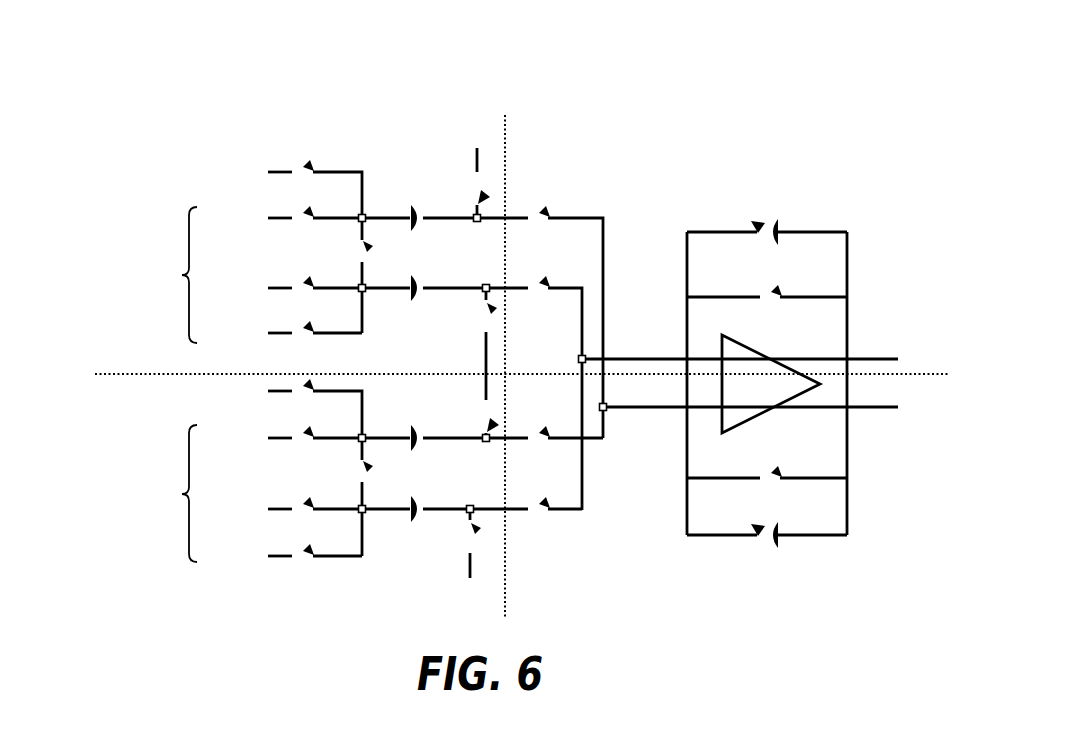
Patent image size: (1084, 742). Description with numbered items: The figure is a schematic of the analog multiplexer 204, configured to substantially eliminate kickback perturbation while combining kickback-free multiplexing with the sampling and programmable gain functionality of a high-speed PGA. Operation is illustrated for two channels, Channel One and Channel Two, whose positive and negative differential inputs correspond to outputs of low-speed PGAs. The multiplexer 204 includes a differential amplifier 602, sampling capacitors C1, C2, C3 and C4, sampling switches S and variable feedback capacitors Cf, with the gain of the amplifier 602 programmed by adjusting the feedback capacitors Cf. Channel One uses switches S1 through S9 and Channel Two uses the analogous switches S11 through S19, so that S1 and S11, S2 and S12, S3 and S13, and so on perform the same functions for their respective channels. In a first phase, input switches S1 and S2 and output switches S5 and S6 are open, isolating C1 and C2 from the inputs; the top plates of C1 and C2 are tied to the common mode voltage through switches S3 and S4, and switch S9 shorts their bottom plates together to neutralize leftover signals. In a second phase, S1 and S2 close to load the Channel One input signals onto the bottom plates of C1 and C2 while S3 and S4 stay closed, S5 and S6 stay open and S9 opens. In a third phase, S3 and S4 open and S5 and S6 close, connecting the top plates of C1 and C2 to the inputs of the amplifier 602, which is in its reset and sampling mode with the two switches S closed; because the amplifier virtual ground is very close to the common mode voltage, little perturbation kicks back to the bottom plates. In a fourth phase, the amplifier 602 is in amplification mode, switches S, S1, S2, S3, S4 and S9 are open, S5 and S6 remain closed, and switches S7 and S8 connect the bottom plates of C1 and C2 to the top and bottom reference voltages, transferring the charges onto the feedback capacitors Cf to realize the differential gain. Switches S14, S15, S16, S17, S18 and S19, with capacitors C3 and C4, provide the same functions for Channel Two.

The analog multiplexer 204 is at (663, 165).
The differential amplifier 602 is at (762, 349).
The input switch S1 is at (305, 197).
The input switch S2 is at (305, 313).
The switch S3 is at (469, 188).
The switch S4 is at (507, 318).
The output switch S5 is at (542, 197).
The output switch S6 is at (539, 266).
The switch S7 is at (304, 151).
The switch S8 is at (305, 267).
The switch S9 is at (383, 254).
The input switch S11 is at (308, 418).
The input switch S12 is at (309, 535).
The switch S13 is at (470, 415).
The switch S14 is at (498, 540).
The output switch S15 is at (539, 419).
The output switch S16 is at (539, 489).
The switch S17 is at (305, 369).
The switch S18 is at (309, 487).
The switch S19 is at (389, 473).
The sampling switch S is at (770, 396).
The sampling capacitor C1 is at (418, 204).
The sampling capacitor C2 is at (419, 306).
The sampling capacitor C3 is at (412, 424).
The sampling capacitor C4 is at (419, 525).
The variable feedback capacitor Cf is at (766, 392).